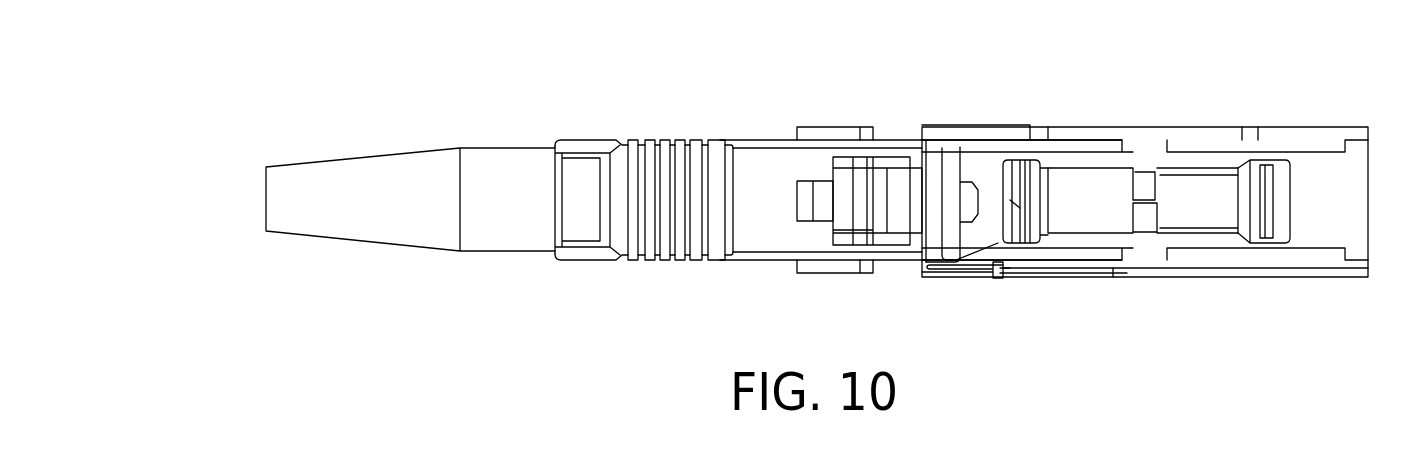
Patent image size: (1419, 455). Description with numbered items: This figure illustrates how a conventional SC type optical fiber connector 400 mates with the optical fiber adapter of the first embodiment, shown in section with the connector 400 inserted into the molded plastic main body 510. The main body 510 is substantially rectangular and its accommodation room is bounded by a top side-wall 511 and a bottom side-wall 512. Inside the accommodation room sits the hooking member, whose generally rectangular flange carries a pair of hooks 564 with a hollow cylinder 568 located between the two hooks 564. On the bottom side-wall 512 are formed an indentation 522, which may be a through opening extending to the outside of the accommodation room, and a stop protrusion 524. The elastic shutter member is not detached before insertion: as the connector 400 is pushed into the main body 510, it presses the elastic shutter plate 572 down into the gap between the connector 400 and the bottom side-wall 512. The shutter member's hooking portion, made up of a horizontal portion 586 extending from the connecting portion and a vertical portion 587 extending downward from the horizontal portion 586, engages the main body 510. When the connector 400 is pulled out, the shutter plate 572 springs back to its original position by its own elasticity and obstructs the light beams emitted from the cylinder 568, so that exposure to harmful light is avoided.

The optical fiber connector 400 is at (535, 105).
The main body 510 is at (1343, 107).
The top side-wall 511 is at (1103, 127).
The bottom side-wall 512 is at (1113, 277).
The indentation 522 is at (1002, 270).
The stop protrusion 524 is at (1010, 187).
The hooks 564 is at (1012, 190).
The hollow cylinder 568 is at (1060, 233).
The shutter plate 572 is at (990, 238).
The horizontal portion 586 is at (1017, 205).
The vertical portion 587 is at (997, 268).